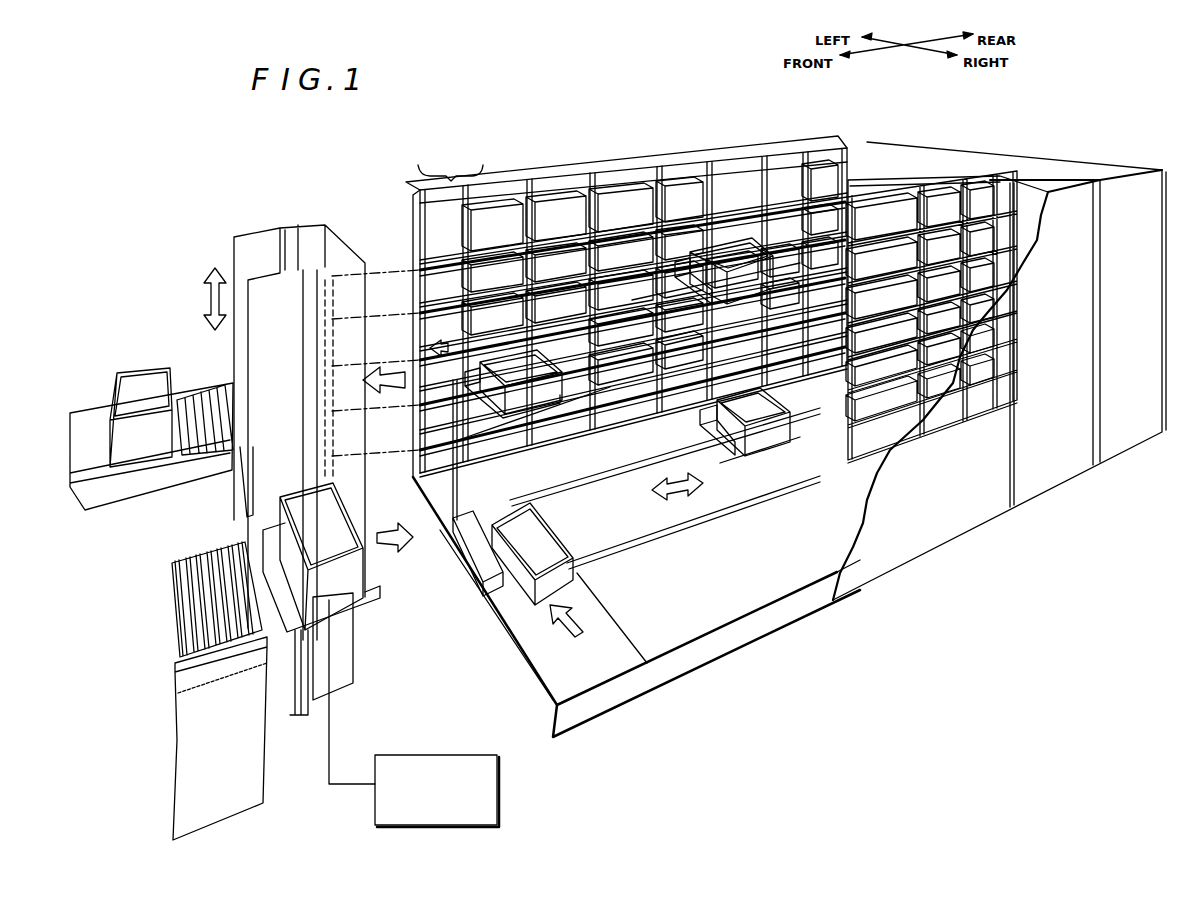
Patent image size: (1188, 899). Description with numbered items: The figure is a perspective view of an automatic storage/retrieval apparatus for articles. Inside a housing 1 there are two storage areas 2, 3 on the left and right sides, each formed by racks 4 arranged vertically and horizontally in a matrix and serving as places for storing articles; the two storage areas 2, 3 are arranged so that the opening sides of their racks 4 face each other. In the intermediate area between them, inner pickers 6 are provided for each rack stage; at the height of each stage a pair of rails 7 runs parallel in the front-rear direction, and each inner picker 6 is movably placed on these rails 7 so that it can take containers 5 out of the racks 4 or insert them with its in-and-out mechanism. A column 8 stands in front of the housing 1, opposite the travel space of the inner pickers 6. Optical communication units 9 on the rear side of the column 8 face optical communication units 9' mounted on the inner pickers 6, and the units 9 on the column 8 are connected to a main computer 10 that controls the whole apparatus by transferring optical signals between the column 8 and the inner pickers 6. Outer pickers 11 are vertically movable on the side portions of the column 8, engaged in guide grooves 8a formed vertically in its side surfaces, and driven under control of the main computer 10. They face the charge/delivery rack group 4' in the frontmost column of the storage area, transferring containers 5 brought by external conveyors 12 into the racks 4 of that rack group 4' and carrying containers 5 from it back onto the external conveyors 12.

The housing 1 is at (1010, 154).
The storage area 2 is at (590, 186).
The storage area 3 is at (948, 200).
The rack 4 is at (714, 282).
The rack group for charge/delivery 4' is at (450, 158).
The container 5 is at (620, 213).
The inner picker 6 is at (412, 482).
The rail 7 is at (596, 477).
The column 8 is at (260, 230).
The guide groove 8a is at (287, 230).
The optical communication unit 9 is at (588, 329).
The optical communication unit 9' is at (595, 424).
The main computer 10 is at (480, 755).
The outer picker 11 is at (228, 345).
The external conveyor 12 is at (95, 423).